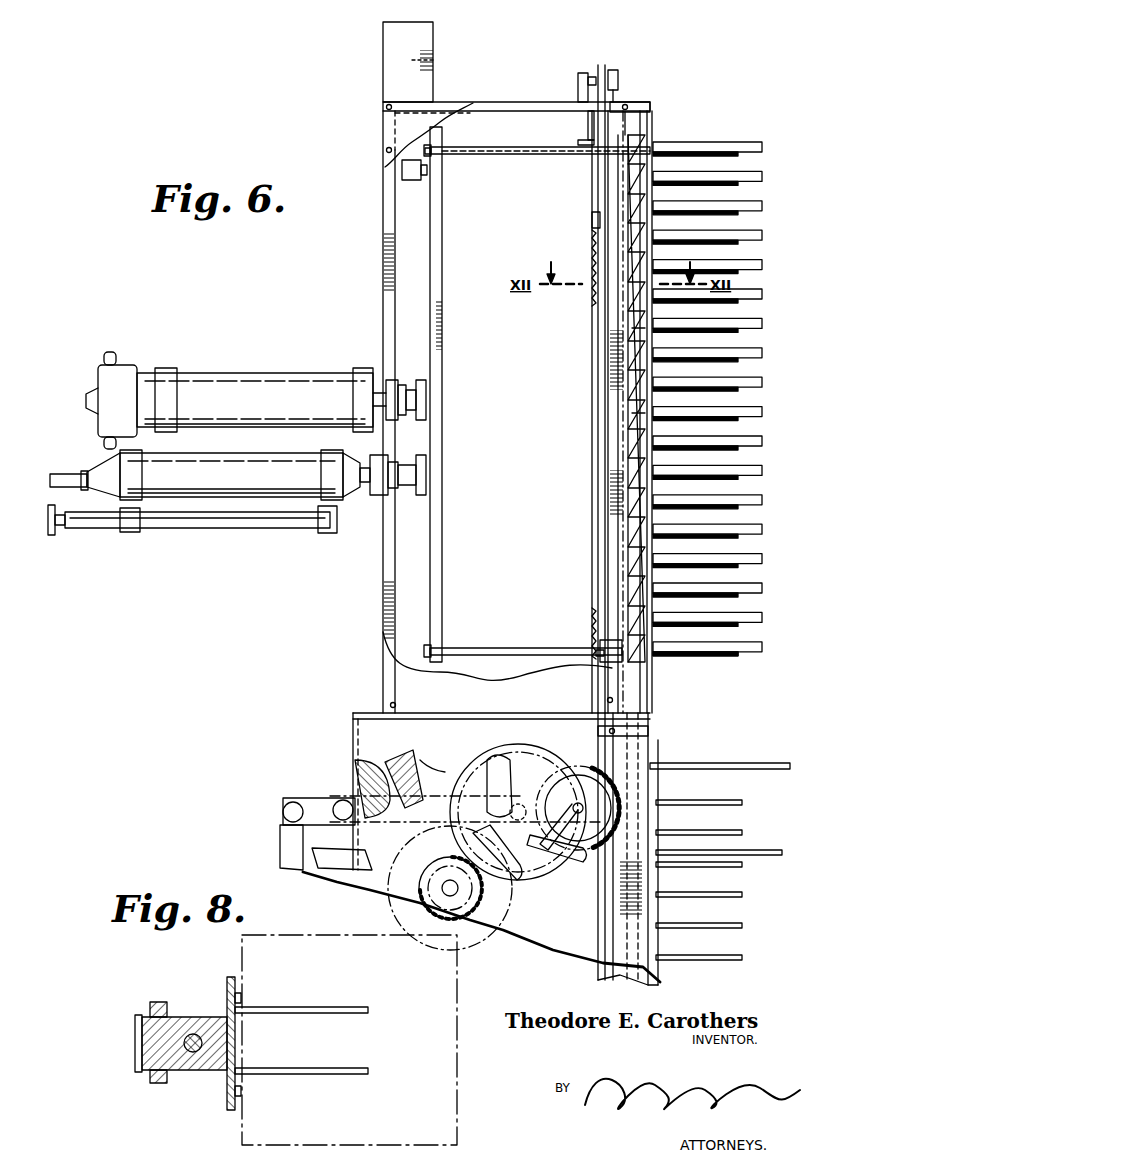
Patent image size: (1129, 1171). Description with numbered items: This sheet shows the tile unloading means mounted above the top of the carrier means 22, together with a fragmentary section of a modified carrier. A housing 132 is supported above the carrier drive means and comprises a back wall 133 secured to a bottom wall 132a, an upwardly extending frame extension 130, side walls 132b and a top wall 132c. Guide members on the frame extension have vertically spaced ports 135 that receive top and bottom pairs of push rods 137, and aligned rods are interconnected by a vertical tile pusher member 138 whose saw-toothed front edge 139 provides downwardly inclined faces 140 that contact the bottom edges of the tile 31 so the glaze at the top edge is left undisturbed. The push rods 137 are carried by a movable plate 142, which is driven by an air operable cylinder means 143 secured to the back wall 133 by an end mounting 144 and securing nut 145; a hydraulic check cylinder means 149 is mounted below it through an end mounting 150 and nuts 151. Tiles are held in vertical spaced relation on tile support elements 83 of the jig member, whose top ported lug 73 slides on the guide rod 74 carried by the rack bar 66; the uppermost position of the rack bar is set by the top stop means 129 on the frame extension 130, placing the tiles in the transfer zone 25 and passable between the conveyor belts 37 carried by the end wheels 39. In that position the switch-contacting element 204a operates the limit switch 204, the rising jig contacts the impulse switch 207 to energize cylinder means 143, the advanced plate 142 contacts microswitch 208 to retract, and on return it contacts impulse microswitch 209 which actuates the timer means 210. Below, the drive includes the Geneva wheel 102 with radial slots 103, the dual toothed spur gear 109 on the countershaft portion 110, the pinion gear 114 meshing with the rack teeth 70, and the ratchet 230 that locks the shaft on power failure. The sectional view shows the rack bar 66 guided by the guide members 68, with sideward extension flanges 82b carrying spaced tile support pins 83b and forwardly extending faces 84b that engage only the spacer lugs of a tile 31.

In FIG. 6, the timer means 210 is at (385, 73).
In FIG. 6, the housing 132 is at (473, 103).
In FIG. 6, the top wall 132c is at (518, 100).
In FIG. 6, the bottom wall 132a is at (352, 716).
In FIG. 6, the side walls 132b is at (498, 670).
In FIG. 6, the back wall 133 is at (383, 231).
In FIG. 6, the movable plate 142 is at (442, 310).
In FIG. 6, the push rods 137 is at (493, 153).
In FIG. 6, the one way impulse microswitch 209 is at (410, 176).
In FIG. 6, the microswitch 208 is at (588, 126).
In FIG. 6, the limit switch 204 is at (578, 78).
In FIG. 6, the switch-contacting element 204a is at (600, 66).
In FIG. 6, the one way impulse switch 207 is at (614, 74).
In FIG. 6, the guide rod 74 is at (624, 101).
In FIG. 6, the top ported lug 73 is at (641, 110).
In FIG. 6, the frame extension 130 is at (607, 481).
In FIG. 6, the saw-toothed front edge 139 is at (648, 146).
In FIG. 6, the inclined faces 140 is at (632, 328).
In FIG. 6, the top stop means 129 is at (592, 219).
In FIG. 6, the rack bar 66 is at (590, 252).
In FIG. 8, the rack bar 66 is at (184, 1072).
In FIG. 6, the ports 135 is at (598, 650).
In FIG. 6, the tile pusher member 138 is at (632, 668).
In FIG. 6, the tile 31 is at (762, 142).
In FIG. 8, the tile 31 is at (457, 1062).
In FIG. 6, the tile support elements 83 is at (742, 562).
In FIG. 6, the carrier means 22 is at (727, 118).
In FIG. 6, the transfer zone 25 is at (764, 270).
In FIG. 6, the conveyor belts 37 is at (758, 763).
In FIG. 6, the air operable cylinder means 143 is at (224, 386).
In FIG. 6, the end mounting 144 is at (386, 378).
In FIG. 6, the securing nut 145 is at (404, 372).
In FIG. 6, the cylinder means 149 is at (215, 484).
In FIG. 6, the end mounting 150 is at (382, 498).
In FIG. 6, the nuts 151 is at (406, 492).
In FIG. 6, the slots 103 is at (403, 762).
In FIG. 6, the pinion gear 114 is at (500, 748).
In FIG. 6, the end wheels 39 is at (577, 762).
In FIG. 6, the dual toothed spur gear 109 is at (480, 906).
In FIG. 6, the countershaft portion 110 is at (446, 893).
In FIG. 6, the ratchet 230 is at (512, 936).
In FIG. 6, the Geneva wheel 102 is at (360, 886).
In FIG. 8, the guide members 68 is at (158, 1002).
In FIG. 8, the rack teeth 70 is at (135, 1045).
In FIG. 8, the sideward extension flanges 82b is at (228, 980).
In FIG. 8, the forwardly extending faces 84b is at (241, 994).
In FIG. 8, the tile support pins 83b is at (296, 1013).